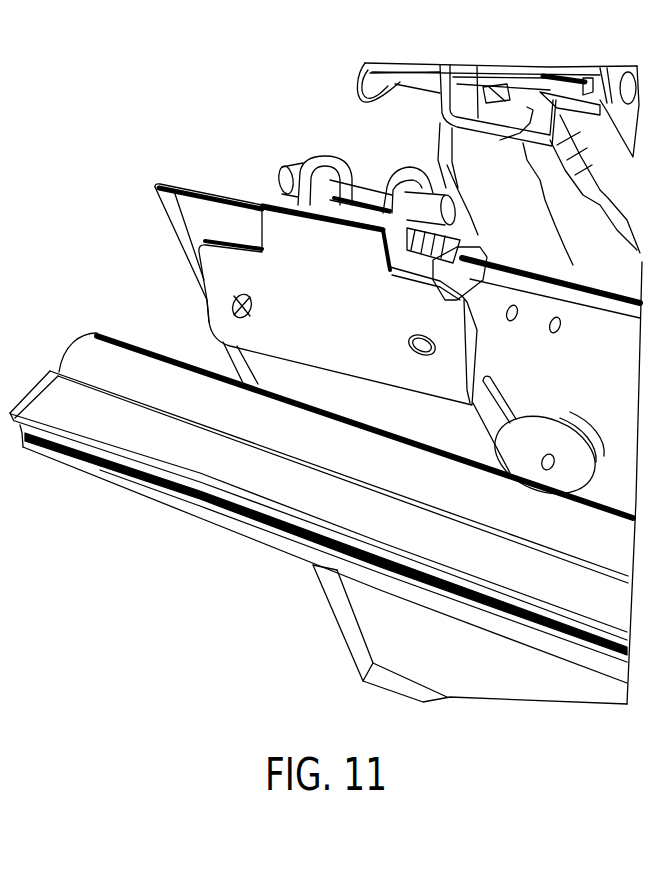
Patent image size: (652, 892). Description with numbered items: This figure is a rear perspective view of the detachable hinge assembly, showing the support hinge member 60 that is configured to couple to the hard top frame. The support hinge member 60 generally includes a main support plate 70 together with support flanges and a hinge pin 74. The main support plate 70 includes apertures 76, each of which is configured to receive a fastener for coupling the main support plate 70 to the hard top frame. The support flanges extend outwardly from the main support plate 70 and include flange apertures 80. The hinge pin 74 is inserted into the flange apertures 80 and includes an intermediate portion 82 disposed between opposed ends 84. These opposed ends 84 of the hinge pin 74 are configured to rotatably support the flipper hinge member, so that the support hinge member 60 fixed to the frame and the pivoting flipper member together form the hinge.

The support hinge member 60 is at (248, 152).
The main support plate 70 is at (302, 347).
The hinge pin 74 is at (282, 131).
The apertures 76 is at (250, 300).
The flange apertures 80 is at (337, 160).
The intermediate portion 82 is at (362, 187).
The opposed ends 84 is at (284, 181).